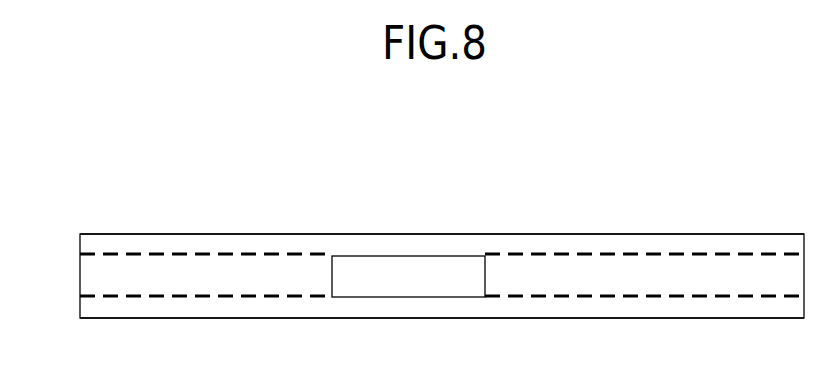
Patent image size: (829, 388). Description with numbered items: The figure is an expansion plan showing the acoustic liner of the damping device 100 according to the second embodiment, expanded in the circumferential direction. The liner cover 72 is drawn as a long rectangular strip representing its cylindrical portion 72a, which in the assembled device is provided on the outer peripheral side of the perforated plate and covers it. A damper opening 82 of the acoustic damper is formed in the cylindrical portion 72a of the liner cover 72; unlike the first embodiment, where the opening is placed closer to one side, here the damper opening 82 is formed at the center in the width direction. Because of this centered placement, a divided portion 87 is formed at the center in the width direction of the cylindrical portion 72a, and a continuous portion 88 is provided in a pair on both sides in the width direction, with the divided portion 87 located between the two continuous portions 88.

The liner cover 72 is at (719, 221).
The cylindrical portion 72a is at (627, 319).
The damper opening 82 is at (408, 265).
The divided portion 87 is at (80, 272).
The continuous portion 88 is at (80, 243).
The damping device 100 is at (562, 180).